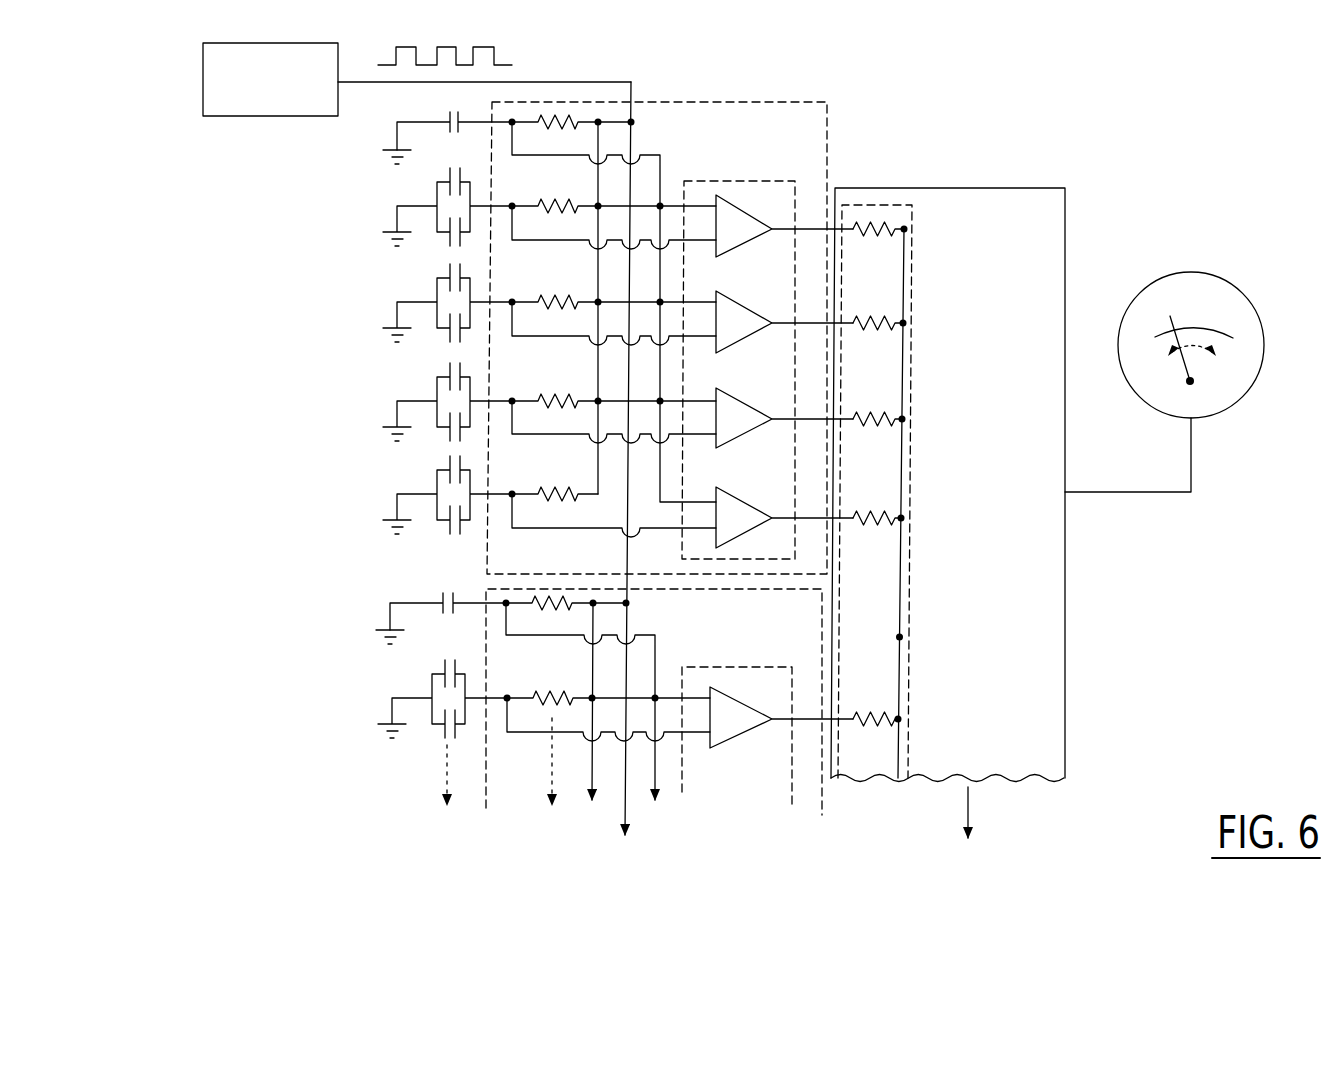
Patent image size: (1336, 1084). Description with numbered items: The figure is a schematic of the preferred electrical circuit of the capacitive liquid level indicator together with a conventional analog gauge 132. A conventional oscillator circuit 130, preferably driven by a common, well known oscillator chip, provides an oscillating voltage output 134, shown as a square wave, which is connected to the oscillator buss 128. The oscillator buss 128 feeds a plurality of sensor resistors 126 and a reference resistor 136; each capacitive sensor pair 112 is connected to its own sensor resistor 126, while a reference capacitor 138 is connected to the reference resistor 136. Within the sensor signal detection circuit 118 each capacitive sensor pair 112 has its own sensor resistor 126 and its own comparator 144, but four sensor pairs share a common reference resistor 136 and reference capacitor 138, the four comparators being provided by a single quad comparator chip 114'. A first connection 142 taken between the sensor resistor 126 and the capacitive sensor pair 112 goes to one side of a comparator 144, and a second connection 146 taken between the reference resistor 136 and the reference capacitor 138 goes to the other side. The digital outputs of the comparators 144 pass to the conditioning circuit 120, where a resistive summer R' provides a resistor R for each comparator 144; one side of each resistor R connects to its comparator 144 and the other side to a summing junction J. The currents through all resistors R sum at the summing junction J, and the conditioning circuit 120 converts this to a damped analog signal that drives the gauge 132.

The oscillator circuit 130 is at (246, 140).
The oscillating voltage output 134 is at (505, 41).
The reference resistor 136 is at (570, 110).
The reference capacitor 138 is at (447, 113).
The capacitive sensor pair 112 is at (410, 190).
The second connection 146 is at (546, 158).
The sensor resistor 126 is at (564, 201).
The first connection 142 is at (544, 244).
The oscillator buss 128 is at (640, 140).
The sensor signal detection circuit 118 is at (792, 98).
The quad comparator chip 114' is at (797, 466).
The comparator 144 is at (752, 239).
The conditioning circuit 120 is at (1042, 176).
The gauge 132 is at (1205, 273).
The resistor R is at (899, 474).
The resistive summer R' is at (922, 502).
The summing junction J is at (903, 637).